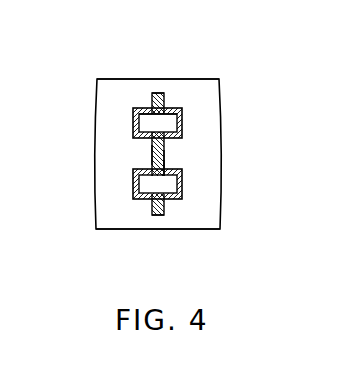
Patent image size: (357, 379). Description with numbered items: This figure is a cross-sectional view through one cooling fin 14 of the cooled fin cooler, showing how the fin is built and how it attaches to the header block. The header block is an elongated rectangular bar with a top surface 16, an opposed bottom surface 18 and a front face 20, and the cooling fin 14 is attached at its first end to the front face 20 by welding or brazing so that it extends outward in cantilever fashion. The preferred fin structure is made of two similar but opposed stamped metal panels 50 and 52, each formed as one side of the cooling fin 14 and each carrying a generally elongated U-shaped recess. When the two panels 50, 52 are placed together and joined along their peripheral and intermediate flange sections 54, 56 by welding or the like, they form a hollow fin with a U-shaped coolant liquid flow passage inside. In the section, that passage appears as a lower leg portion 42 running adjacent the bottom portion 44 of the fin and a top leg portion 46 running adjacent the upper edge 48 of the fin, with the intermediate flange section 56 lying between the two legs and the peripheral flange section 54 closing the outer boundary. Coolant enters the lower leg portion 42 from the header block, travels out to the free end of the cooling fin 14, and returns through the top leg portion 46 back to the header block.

The cooling fin 14 is at (170, 148).
The top surface 16 is at (122, 79).
The bottom surface 18 is at (122, 230).
The front face 20 is at (104, 205).
The lower leg portion 42 is at (178, 192).
The bottom portion 44 is at (162, 215).
The top leg portion 46 is at (173, 125).
The upper edge 48 is at (162, 102).
The stamped metal panel 50 is at (173, 166).
The stamped metal panel 52 is at (146, 153).
The peripheral flange section 54 is at (166, 110).
The intermediate flange section 56 is at (170, 160).